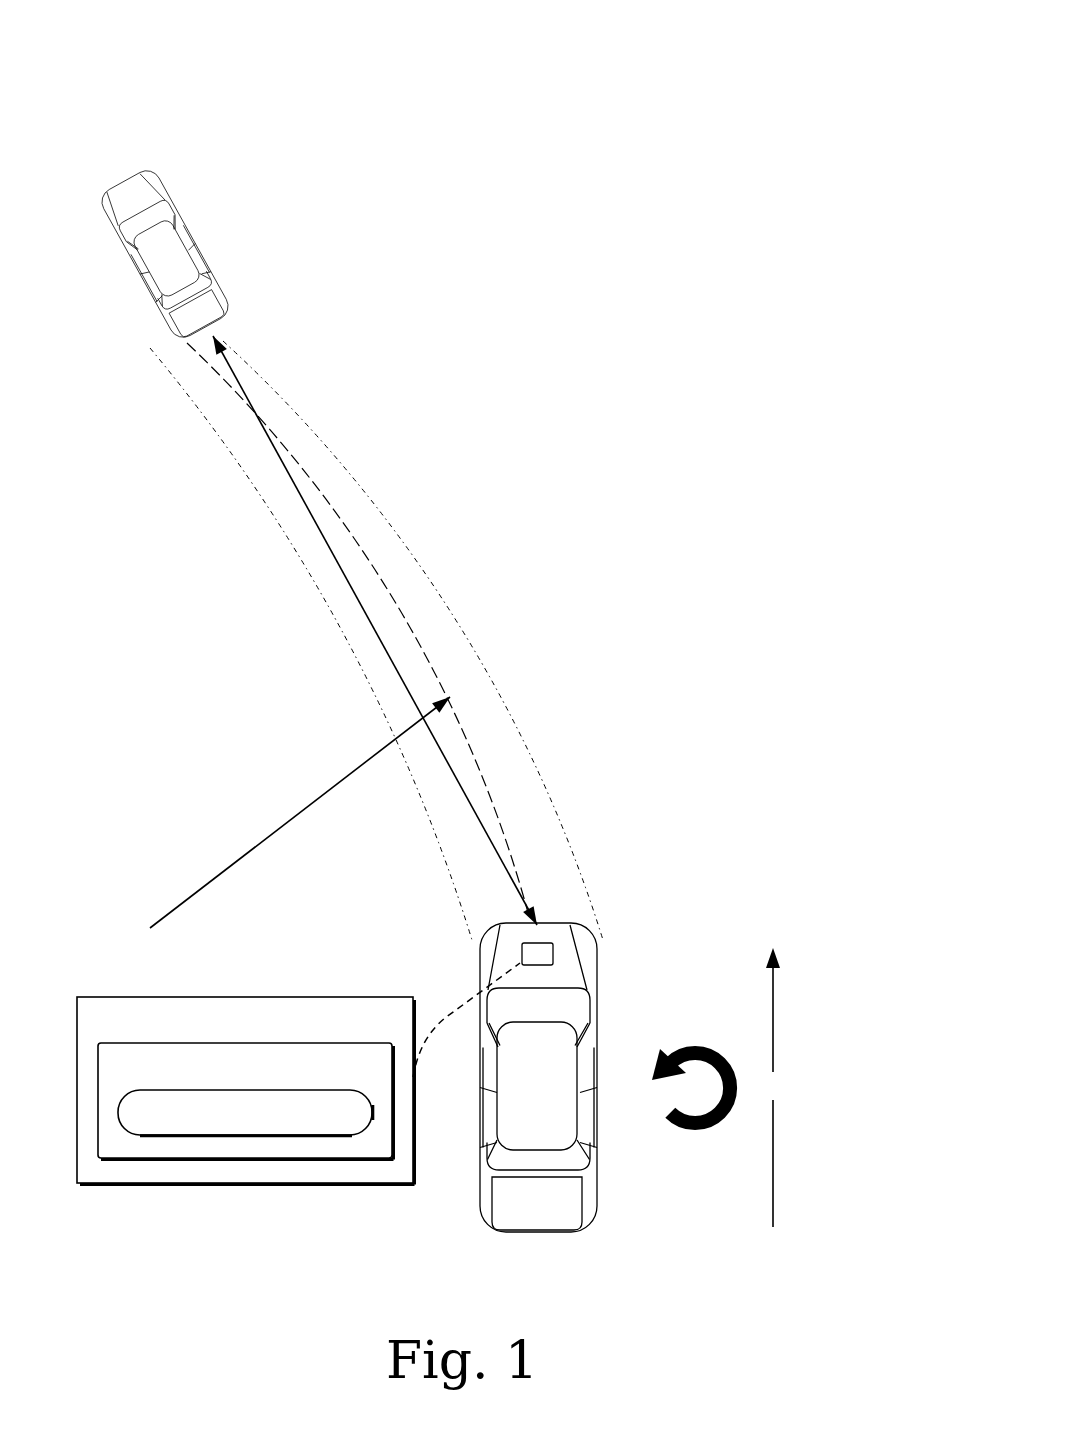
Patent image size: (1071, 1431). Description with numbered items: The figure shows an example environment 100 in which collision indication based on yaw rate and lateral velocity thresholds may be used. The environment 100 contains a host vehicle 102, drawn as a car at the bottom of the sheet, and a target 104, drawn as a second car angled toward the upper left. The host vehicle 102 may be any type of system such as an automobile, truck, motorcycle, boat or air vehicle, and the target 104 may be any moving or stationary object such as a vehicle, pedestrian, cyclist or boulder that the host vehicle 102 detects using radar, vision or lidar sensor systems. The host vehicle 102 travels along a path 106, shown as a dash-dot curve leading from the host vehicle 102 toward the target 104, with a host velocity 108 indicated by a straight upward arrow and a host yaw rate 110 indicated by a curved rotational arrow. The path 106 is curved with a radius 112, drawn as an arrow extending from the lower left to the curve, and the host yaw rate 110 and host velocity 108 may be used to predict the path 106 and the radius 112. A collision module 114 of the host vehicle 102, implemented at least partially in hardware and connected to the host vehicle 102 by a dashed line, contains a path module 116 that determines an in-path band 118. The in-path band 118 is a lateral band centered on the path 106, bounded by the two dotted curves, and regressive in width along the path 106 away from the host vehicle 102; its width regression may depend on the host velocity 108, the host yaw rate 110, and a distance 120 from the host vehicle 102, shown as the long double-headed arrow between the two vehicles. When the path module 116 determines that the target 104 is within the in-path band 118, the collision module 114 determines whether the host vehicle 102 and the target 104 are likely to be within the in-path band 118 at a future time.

The example environment 100 is at (807, 43).
The host vehicle 102 is at (520, 923).
The target 104 is at (170, 199).
The path 106 is at (388, 585).
The host velocity 108 is at (774, 1087).
The host yaw rate 110 is at (717, 1050).
The radius 112 is at (291, 812).
The collision module 114 is at (298, 1074).
The path module 116 is at (246, 1101).
The in-path band 118 is at (362, 520).
The distance 120 is at (325, 537).